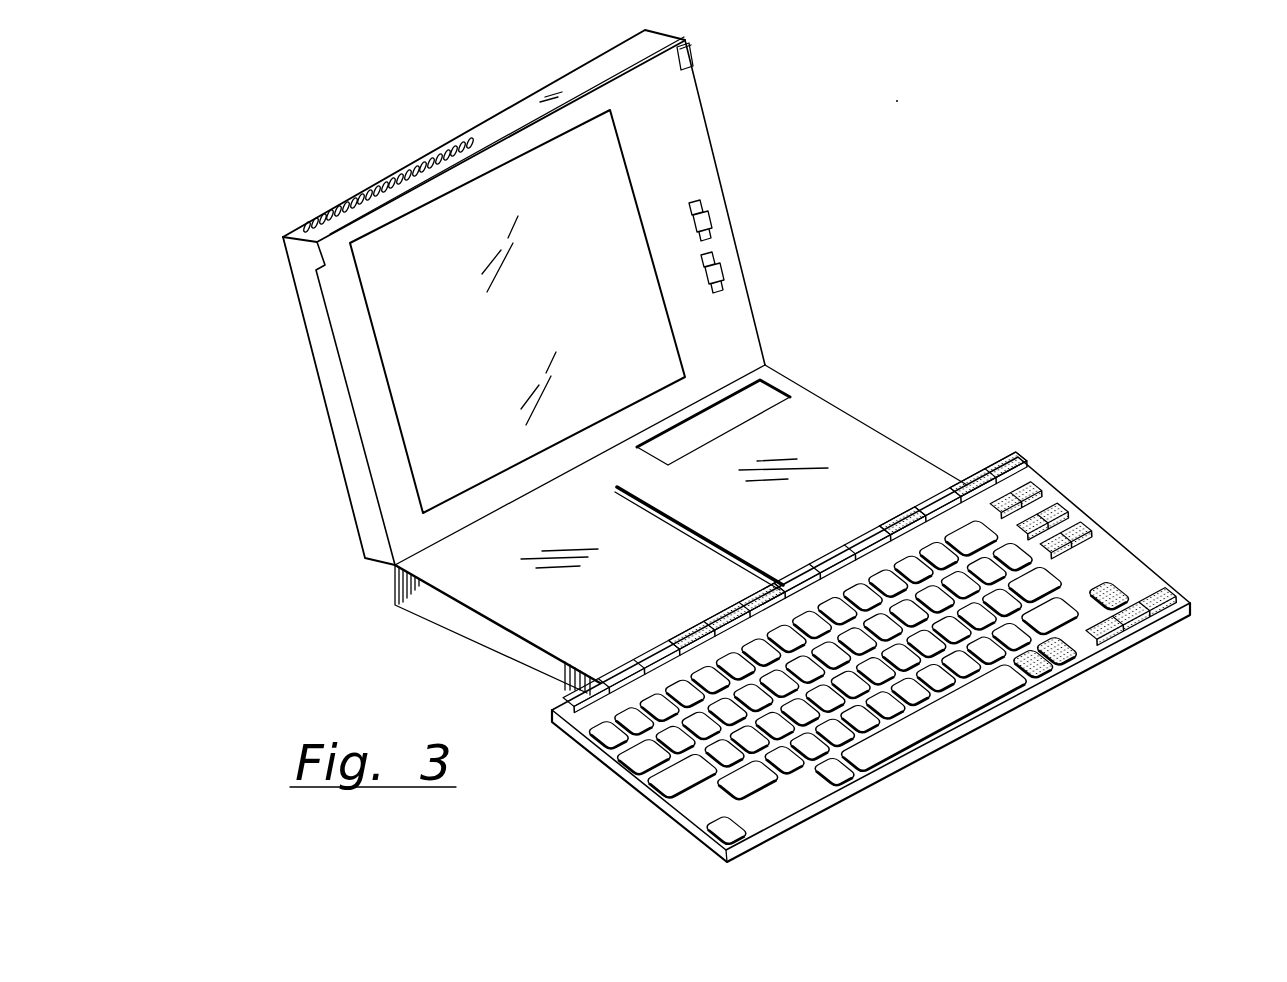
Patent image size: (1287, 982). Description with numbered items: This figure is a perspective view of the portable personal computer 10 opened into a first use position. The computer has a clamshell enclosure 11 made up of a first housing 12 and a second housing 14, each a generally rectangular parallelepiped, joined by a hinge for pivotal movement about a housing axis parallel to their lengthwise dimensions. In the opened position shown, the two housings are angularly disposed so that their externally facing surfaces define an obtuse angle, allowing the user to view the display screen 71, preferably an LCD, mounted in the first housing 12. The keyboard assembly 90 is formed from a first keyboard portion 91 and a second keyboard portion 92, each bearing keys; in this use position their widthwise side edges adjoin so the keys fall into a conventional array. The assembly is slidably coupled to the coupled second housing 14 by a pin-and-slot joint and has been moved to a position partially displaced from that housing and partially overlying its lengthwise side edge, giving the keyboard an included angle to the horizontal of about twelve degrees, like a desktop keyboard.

The portable personal computer 10 is at (283, 186).
The clamshell enclosure 11 is at (289, 273).
The first housing 12 is at (308, 320).
The display screen 71 is at (413, 365).
The second housing 14 is at (420, 610).
The keyboard assembly 90 is at (989, 454).
The first keyboard portion 91 is at (645, 793).
The second keyboard portion 92 is at (1115, 540).